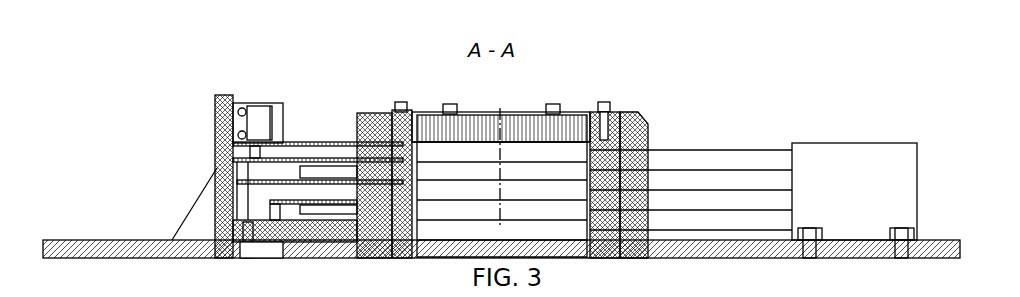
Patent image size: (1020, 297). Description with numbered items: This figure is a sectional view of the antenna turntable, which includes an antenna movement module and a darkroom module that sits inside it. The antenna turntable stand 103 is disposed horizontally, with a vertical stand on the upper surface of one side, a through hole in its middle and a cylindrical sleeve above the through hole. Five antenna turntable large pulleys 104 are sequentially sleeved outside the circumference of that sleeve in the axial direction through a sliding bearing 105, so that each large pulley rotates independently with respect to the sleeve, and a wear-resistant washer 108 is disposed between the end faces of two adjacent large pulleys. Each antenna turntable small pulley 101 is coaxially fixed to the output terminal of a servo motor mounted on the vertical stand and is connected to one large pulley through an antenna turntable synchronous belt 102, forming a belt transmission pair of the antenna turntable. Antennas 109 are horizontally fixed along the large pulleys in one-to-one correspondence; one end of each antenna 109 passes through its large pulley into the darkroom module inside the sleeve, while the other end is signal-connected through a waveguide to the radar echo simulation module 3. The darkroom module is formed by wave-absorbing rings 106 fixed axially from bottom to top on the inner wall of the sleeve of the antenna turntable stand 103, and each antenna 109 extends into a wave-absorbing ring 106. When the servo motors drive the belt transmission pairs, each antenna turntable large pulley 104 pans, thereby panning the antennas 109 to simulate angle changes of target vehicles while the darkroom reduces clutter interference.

The antenna turntable small pulley 101 is at (213, 212).
The antenna turntable synchronous belt 102 is at (215, 145).
The antenna turntable stand 103 is at (215, 125).
The antenna turntable large pulley 104 is at (357, 125).
The sliding bearing 105 is at (378, 115).
The wave-absorbing ring 106 is at (415, 128).
The wear-resistant washer 108 is at (633, 112).
The antenna 109 is at (648, 118).
The radar echo simulation module 3 is at (816, 157).